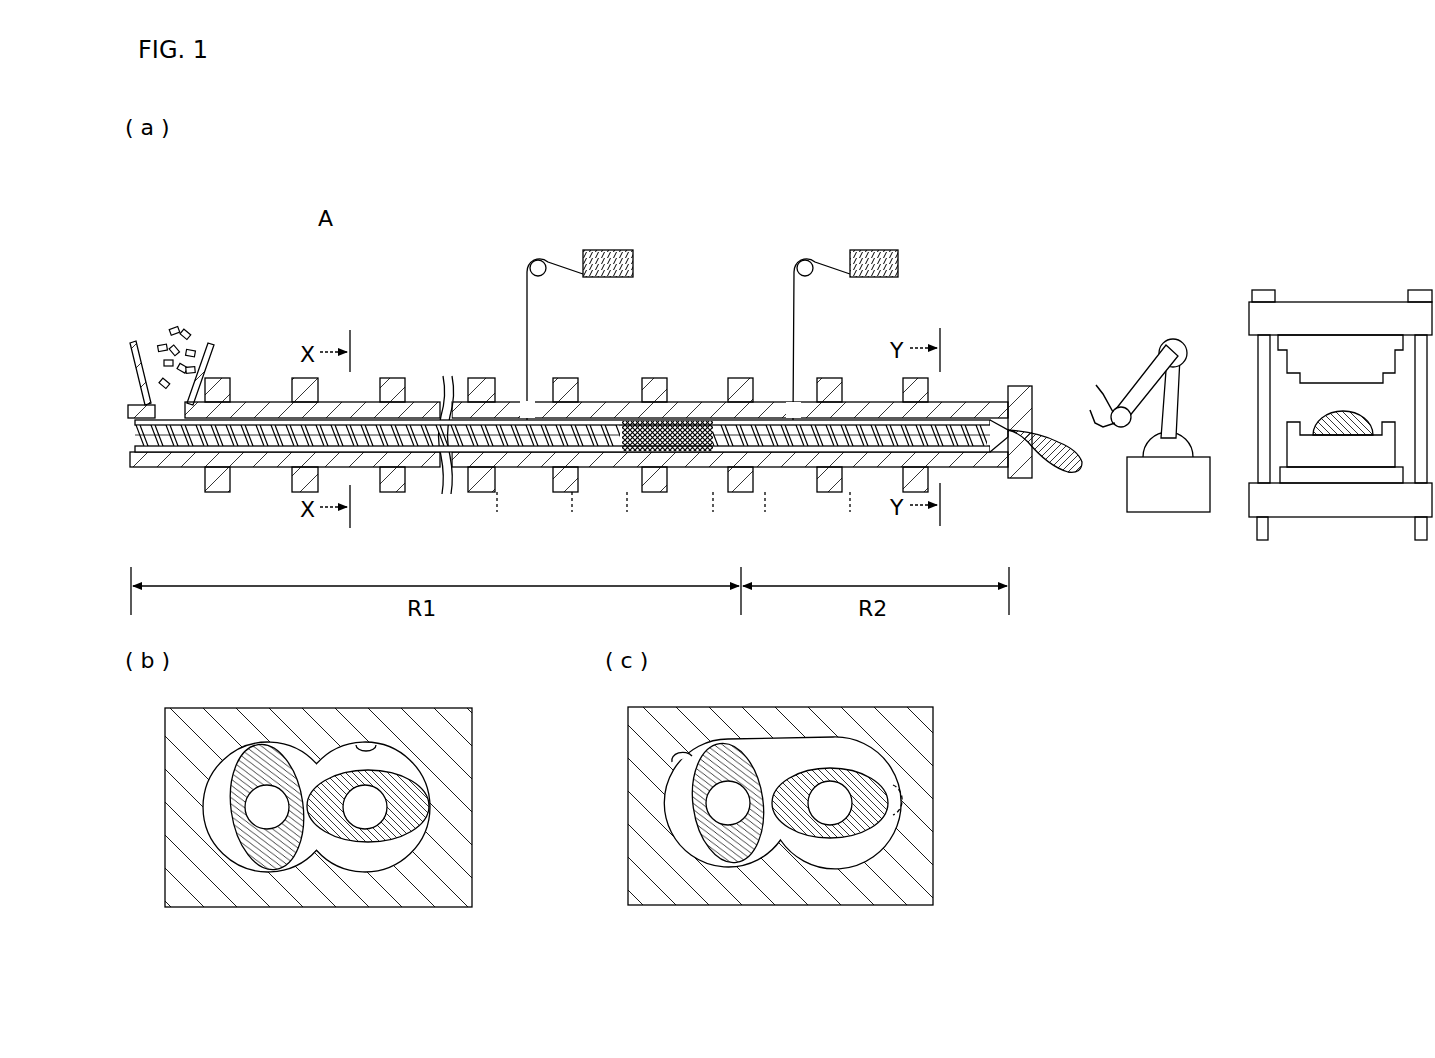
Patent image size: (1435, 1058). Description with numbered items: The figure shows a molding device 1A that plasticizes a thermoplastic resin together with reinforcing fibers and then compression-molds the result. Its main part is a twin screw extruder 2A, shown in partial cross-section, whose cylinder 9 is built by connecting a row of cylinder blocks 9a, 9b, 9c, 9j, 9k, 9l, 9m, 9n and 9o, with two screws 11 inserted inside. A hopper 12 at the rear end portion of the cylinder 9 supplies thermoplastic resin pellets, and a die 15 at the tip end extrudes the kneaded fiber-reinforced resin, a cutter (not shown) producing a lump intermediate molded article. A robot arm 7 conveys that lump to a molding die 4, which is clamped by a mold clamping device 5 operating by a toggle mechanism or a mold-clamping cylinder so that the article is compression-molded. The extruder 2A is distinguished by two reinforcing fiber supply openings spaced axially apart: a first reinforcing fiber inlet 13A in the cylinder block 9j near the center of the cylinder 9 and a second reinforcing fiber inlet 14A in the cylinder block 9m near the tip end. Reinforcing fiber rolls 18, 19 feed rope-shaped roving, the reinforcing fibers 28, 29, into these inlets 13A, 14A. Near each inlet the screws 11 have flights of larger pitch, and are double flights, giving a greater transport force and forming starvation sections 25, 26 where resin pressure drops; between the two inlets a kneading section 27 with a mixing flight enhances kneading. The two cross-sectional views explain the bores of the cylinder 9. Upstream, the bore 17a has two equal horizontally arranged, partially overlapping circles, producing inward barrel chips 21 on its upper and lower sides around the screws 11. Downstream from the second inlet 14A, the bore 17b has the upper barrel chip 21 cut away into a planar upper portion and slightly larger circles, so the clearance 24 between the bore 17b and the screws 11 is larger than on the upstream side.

The molding device 1A is at (1235, 178).
The twin screw extruder 2A is at (403, 378).
The molding die 4 is at (1316, 367).
The mold clamping device 5 is at (1379, 300).
The robot arm 7 is at (1168, 335).
The cylinder 9 is at (432, 400).
The cylinder block 9a is at (137, 405).
The cylinder block 9b is at (259, 400).
The cylinder block 9c is at (372, 400).
The cylinder block 9j is at (482, 400).
The cylinder block 9k is at (630, 400).
The cylinder block 9l is at (683, 400).
The cylinder block 9m is at (755, 402).
The cylinder block 9n is at (855, 402).
The cylinder block 9o is at (985, 402).
The screw 11 is at (190, 452).
The hopper 12 is at (204, 345).
The first reinforcing fiber inlet 13A is at (536, 410).
The second reinforcing fiber inlet 14A is at (798, 410).
The die 15 is at (1027, 390).
The bore 17a is at (370, 743).
The bore 17b is at (689, 757).
The reinforcing fiber roll 18 is at (608, 250).
The reinforcing fiber roll 19 is at (868, 250).
The barrel chip 21 is at (314, 757).
The clearance 24 is at (891, 792).
The starvation section 25 is at (572, 505).
The starvation section 26 is at (850, 505).
The kneading section 27 is at (713, 505).
The reinforcing fibers 28 is at (524, 320).
The reinforcing fibers 29 is at (790, 310).